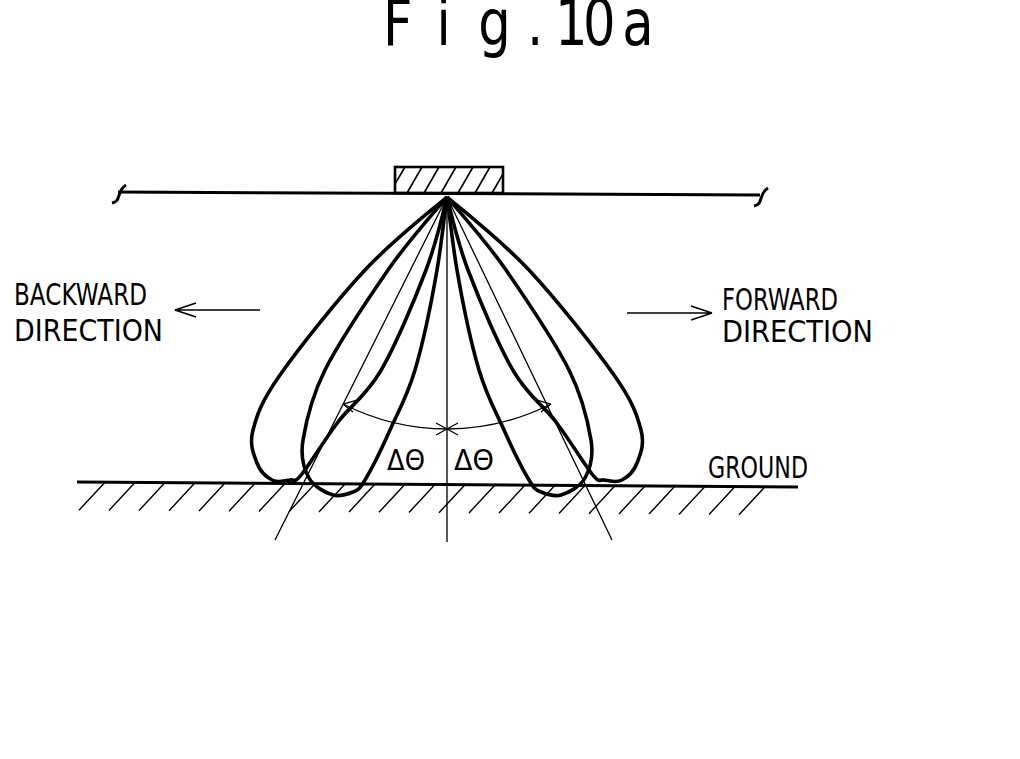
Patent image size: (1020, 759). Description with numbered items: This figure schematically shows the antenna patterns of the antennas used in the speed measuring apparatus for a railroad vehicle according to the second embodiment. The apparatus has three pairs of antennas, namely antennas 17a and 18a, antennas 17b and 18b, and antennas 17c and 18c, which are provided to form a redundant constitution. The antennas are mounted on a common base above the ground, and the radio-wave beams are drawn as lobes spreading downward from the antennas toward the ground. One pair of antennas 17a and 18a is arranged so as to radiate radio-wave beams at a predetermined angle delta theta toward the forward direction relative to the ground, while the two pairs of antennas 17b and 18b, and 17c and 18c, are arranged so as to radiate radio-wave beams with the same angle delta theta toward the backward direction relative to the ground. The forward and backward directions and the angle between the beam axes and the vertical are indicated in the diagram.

The antenna 17a is at (584, 146).
The antenna 18a is at (584, 146).
The antenna 17b is at (584, 146).
The antenna 18b is at (584, 146).
The antenna 17c is at (584, 146).
The antenna 18c is at (427, 167).